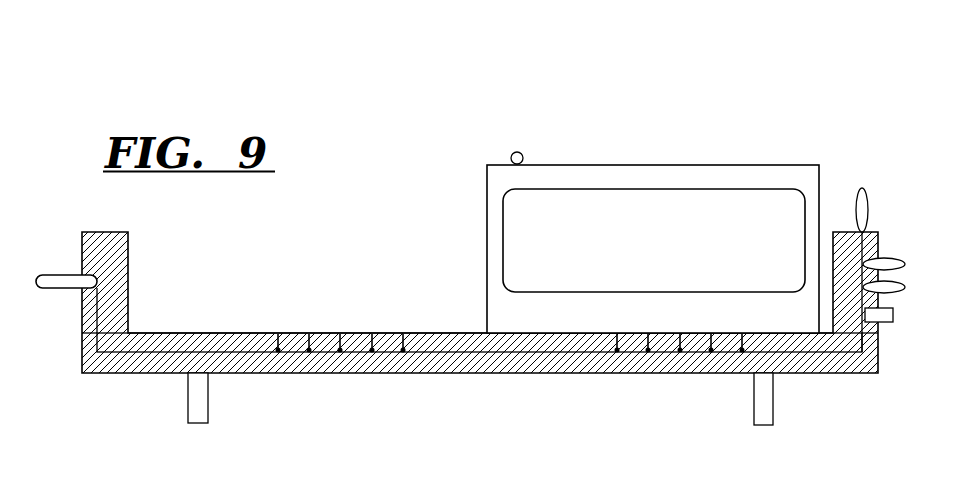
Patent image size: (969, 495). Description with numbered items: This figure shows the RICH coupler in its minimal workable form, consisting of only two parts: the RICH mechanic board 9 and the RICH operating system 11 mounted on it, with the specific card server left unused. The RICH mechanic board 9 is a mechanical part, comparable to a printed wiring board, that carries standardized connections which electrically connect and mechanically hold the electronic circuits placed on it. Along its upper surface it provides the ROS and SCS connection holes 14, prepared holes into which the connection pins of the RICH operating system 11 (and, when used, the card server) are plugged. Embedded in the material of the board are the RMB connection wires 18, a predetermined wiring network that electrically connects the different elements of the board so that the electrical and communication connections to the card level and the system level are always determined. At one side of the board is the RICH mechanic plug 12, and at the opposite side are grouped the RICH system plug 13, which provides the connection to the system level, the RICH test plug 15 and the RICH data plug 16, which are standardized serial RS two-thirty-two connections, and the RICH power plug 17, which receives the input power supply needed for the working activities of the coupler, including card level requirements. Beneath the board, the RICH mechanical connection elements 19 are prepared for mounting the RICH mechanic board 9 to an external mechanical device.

The RICH mechanic board 9 is at (66, 364).
The RICH operating system 11 is at (601, 165).
The RICH mechanic plug 12 is at (58, 283).
The RICH system plug 13 is at (857, 205).
The ROS and SCS connection holes 14 is at (278, 350).
The RICH test plug 15 is at (893, 260).
The RICH data plug 16 is at (863, 287).
The RICH power plug 17 is at (897, 325).
The RMB connection wires 18 is at (182, 337).
The RICH mechanical connection elements 19 is at (198, 424).